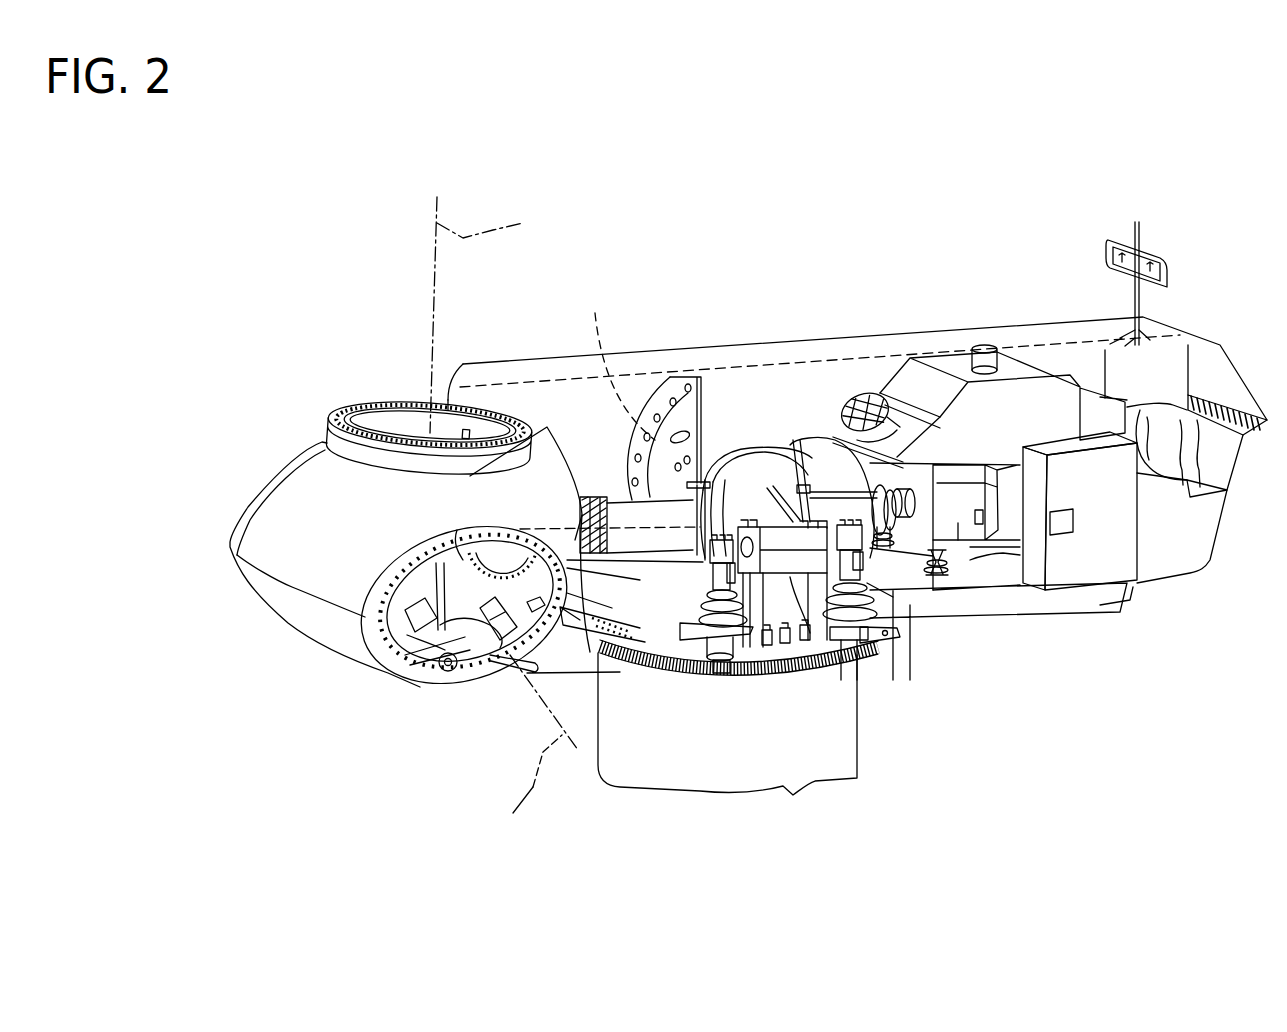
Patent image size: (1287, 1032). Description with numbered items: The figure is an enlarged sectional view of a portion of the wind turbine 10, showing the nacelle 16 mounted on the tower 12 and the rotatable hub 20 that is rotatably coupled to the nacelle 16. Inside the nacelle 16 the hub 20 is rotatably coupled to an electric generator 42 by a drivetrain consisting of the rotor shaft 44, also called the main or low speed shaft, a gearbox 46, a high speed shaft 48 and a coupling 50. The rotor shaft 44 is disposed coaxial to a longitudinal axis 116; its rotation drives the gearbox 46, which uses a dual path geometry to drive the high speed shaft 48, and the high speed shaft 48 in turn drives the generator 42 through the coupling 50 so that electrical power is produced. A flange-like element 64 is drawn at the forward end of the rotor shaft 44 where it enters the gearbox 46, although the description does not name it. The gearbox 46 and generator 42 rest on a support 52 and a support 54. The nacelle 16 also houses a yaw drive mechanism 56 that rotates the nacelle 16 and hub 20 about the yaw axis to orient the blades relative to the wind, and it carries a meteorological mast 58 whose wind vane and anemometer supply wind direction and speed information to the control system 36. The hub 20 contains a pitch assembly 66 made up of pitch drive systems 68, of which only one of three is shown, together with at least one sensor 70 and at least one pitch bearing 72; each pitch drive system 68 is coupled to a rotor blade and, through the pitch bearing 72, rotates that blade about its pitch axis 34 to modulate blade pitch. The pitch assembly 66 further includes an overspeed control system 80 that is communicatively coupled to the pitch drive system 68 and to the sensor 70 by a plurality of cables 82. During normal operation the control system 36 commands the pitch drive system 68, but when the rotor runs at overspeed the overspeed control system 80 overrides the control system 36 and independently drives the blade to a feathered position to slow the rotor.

The wind turbine 10 is at (250, 268).
The tower 12 is at (790, 797).
The nacelle 16 is at (840, 283).
The hub 20 is at (210, 535).
The pitch axis 34 is at (504, 519).
The control system 36 is at (1072, 467).
The electric generator 42 is at (957, 537).
The rotor shaft 44 is at (615, 510).
The gearbox 46 is at (804, 438).
The high speed shaft 48 is at (870, 527).
The coupling 50 is at (903, 462).
The support 52 is at (826, 640).
The support 54 is at (957, 570).
The yaw drive mechanism 56 is at (722, 633).
The meteorological mast 58 is at (1170, 255).
The rotor bearing flange 64 is at (662, 432).
The pitch assembly 66 is at (415, 527).
The pitch drive system 68 is at (380, 634).
The sensor 70 is at (557, 643).
The pitch bearing 72 is at (397, 677).
The overspeed control system 80 is at (490, 680).
The cables 82 is at (480, 600).
The longitudinal axis 116 is at (609, 361).